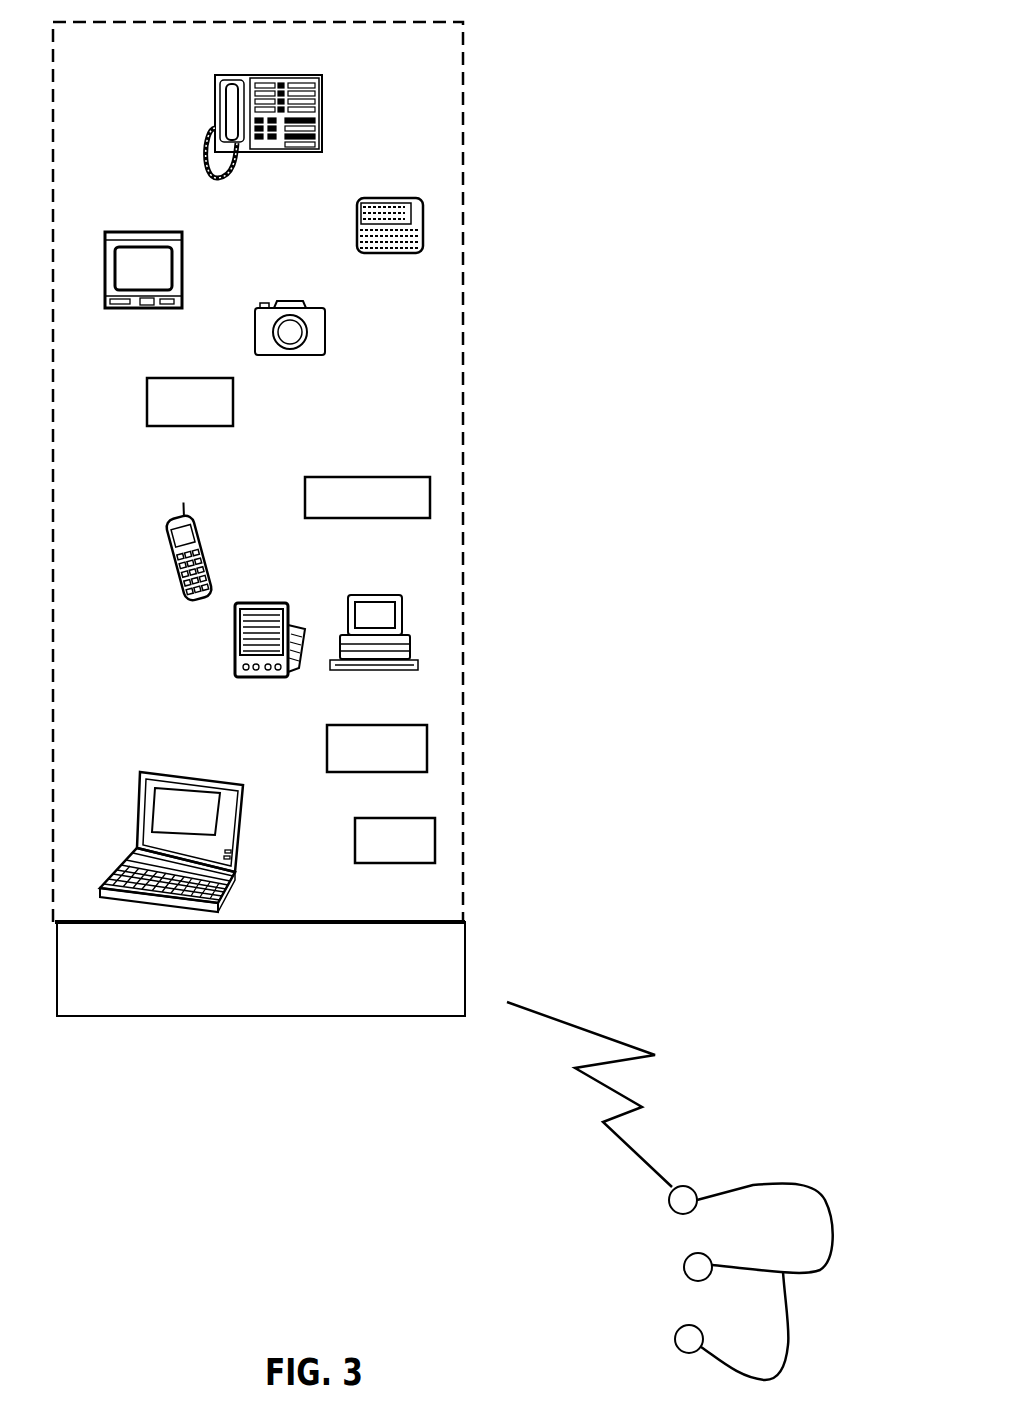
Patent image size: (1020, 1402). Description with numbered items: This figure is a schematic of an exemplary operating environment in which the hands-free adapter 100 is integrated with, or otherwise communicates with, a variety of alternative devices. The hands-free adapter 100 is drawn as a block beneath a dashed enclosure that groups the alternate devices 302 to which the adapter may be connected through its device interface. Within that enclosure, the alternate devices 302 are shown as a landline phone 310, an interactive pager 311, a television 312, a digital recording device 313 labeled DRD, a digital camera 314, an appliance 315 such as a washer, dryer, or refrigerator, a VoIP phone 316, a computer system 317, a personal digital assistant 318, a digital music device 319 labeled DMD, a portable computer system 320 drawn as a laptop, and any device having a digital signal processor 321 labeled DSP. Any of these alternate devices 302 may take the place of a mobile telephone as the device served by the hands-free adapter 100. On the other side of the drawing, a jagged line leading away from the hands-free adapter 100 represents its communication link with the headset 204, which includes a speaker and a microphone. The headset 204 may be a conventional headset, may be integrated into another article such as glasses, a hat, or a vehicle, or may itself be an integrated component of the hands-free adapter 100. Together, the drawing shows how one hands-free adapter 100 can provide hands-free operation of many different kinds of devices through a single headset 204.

The hands-free adapter 100 is at (465, 962).
The headset 204 is at (753, 1185).
The alternate devices 302 is at (465, 545).
The landline phone 310 is at (215, 110).
The interactive pager 311 is at (381, 254).
The television 312 is at (165, 232).
The digital recording device 313 is at (145, 408).
The digital camera 314 is at (300, 355).
The appliance 315 is at (402, 477).
The VoIP phone 316 is at (205, 557).
The computer system 317 is at (375, 595).
The personal digital assistant 318 is at (235, 643).
The digital music device 319 is at (325, 755).
The portable computer system 320 is at (112, 868).
The device having a digital signal processor 321 is at (396, 864).